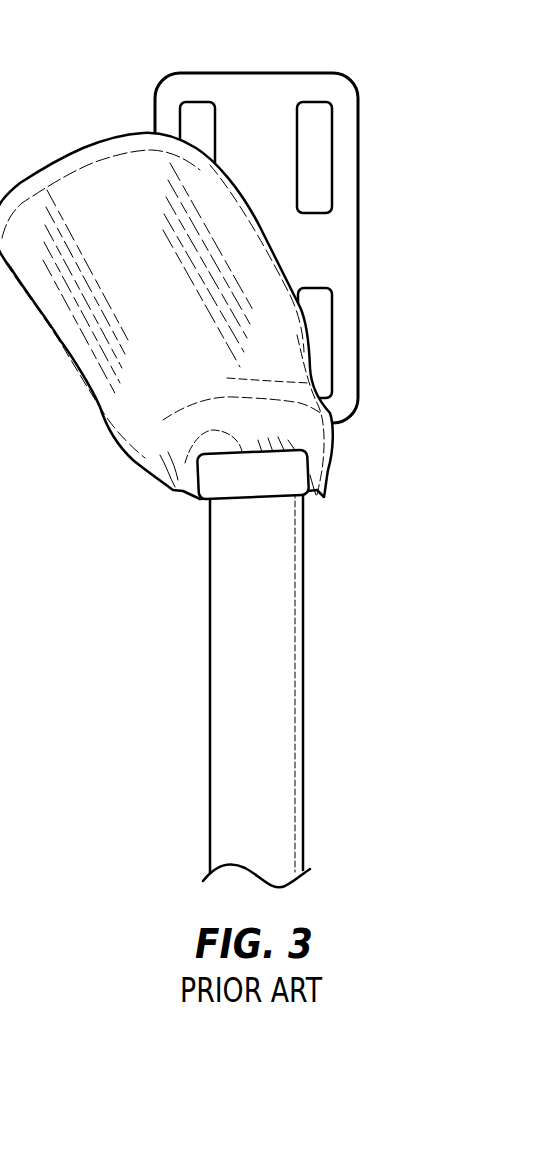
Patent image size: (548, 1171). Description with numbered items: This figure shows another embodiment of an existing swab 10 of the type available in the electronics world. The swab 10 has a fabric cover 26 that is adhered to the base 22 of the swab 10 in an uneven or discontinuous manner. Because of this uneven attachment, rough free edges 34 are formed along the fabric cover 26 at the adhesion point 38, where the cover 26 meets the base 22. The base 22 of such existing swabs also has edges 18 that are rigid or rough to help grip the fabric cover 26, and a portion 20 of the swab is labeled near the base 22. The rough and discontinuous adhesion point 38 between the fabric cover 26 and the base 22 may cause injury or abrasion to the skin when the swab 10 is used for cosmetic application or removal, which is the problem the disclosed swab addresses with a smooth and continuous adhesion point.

The swab 10 is at (357, 51).
The edges 18 is at (360, 262).
The plate body / mounting slots 20 is at (198, 84).
The base 22 is at (273, 767).
The fabric cover 26 is at (84, 197).
The rough free edges 34 is at (172, 494).
The adhesion point 38 is at (238, 478).